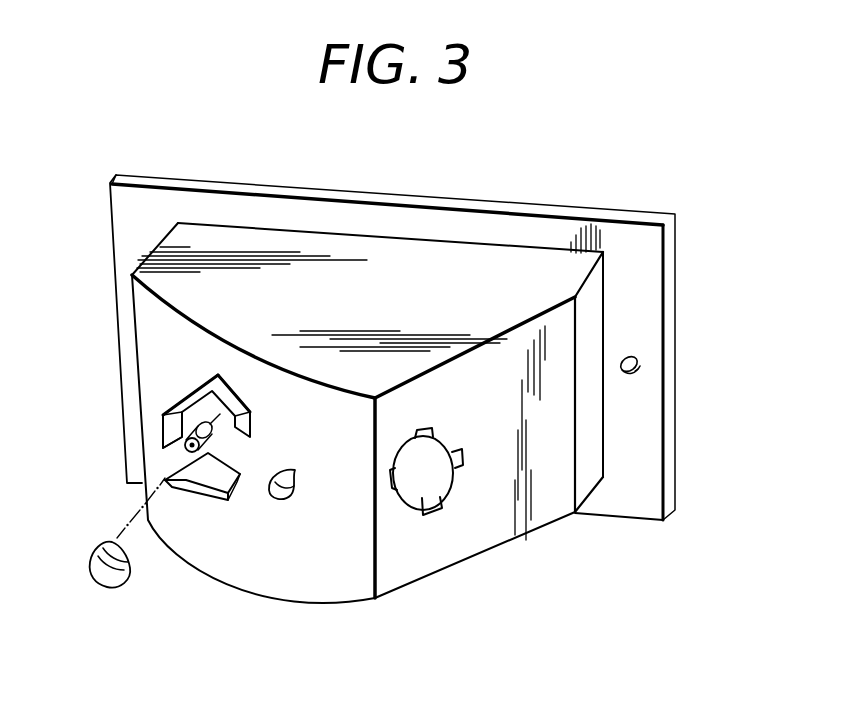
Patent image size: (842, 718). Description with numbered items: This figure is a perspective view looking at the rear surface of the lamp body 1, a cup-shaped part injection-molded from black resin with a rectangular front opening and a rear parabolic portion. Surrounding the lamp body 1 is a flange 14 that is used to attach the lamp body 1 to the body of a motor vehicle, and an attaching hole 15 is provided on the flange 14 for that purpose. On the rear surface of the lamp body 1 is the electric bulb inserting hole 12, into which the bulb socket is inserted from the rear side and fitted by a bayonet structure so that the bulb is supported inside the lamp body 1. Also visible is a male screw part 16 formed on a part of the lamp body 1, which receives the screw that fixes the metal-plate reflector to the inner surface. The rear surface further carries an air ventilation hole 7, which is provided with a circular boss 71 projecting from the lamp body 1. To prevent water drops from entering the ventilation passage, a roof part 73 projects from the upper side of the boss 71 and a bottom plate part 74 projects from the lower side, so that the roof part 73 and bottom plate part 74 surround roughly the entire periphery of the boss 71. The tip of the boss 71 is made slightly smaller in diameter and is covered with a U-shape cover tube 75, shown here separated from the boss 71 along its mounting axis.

The lamp body 1 is at (400, 262).
The flange 14 is at (648, 289).
The attaching hole 15 is at (640, 363).
The electric bulb inserting hole 12 is at (437, 468).
The male screw part 16 is at (295, 500).
The air ventilation hole 7 is at (180, 450).
The circular boss 71 is at (190, 393).
The roof part 73 is at (202, 395).
The bottom plate part 74 is at (210, 480).
The U-shape cover tube 75 is at (95, 587).